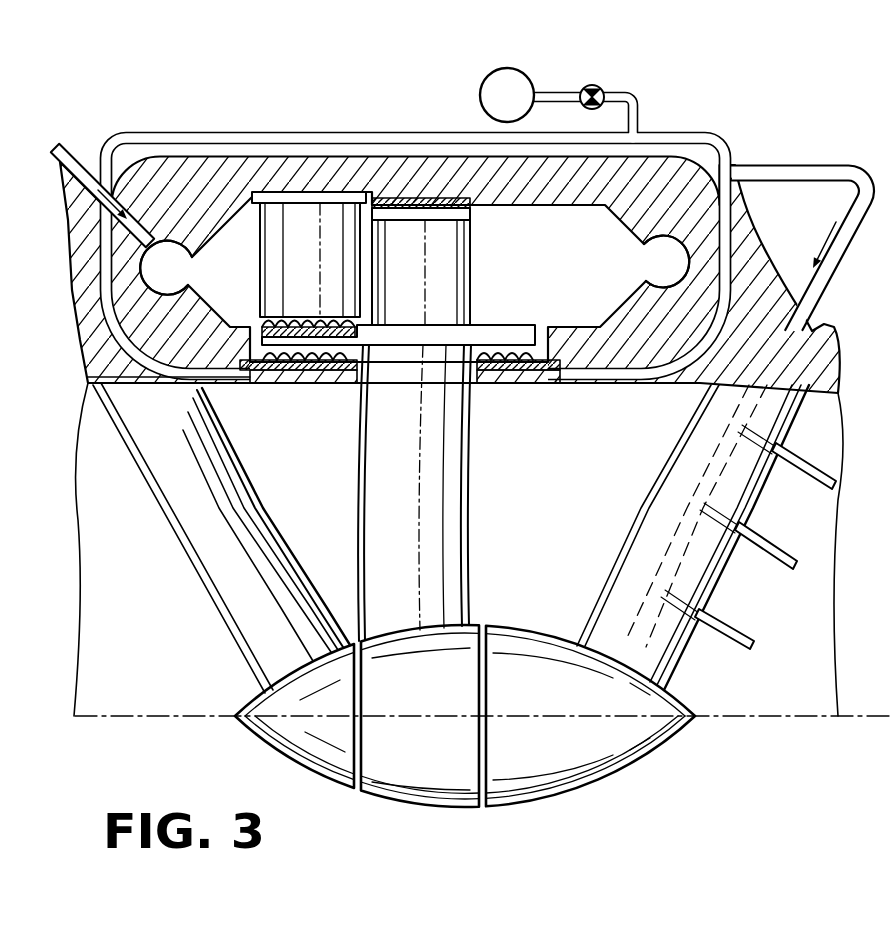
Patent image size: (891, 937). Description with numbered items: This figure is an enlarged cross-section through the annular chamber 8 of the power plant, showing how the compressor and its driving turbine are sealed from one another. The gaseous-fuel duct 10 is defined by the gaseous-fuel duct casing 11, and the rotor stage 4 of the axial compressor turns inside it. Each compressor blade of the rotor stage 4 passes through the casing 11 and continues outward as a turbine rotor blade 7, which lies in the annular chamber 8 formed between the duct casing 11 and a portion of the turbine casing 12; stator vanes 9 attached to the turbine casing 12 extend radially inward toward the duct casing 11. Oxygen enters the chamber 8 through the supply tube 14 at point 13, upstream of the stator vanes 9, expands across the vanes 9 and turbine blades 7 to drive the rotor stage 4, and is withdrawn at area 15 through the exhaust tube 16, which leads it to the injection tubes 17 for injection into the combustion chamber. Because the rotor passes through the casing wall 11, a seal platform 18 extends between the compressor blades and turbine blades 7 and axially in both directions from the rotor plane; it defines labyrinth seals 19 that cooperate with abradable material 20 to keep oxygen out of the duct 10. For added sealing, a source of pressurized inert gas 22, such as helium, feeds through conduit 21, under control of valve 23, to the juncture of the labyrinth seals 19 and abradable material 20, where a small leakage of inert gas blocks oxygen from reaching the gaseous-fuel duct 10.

The rotor stage 4 is at (440, 550).
The turbine rotor blade 7 is at (393, 230).
The annular chamber 8 is at (517, 266).
The stator vanes 9 is at (297, 218).
The gaseous-fuel duct 10 is at (752, 697).
The gaseous-fuel duct casing 11 is at (672, 372).
The turbine casing 12 is at (426, 168).
The supply point 13 is at (173, 242).
The supply tube 14 is at (70, 157).
The withdrawal area 15 is at (661, 248).
The exhaust tube 16 is at (800, 168).
The injection tubes 17 is at (717, 560).
The seal platform 18 is at (513, 338).
The labyrinth seals 19 is at (294, 362).
The abradable material 20 is at (323, 352).
The conduit 21 is at (227, 387).
The source of pressurized inert gas 22 is at (507, 90).
The valve 23 is at (595, 85).